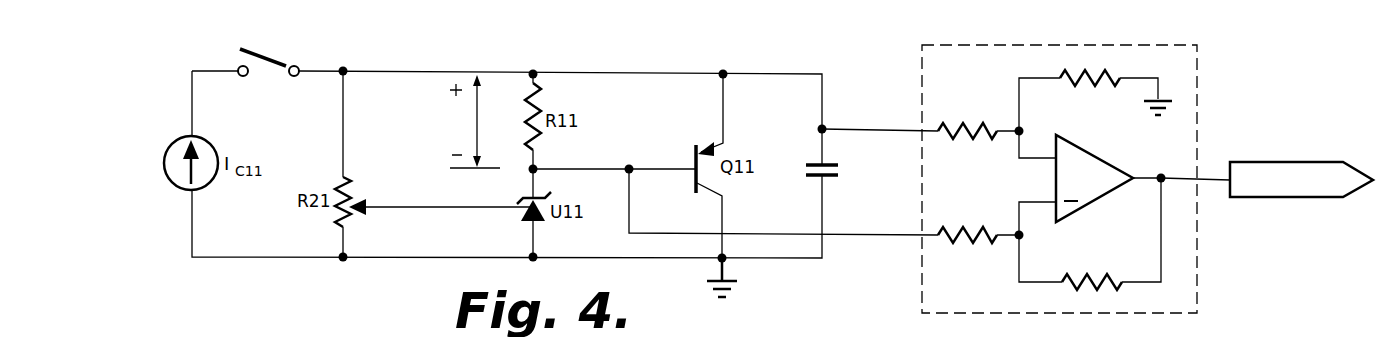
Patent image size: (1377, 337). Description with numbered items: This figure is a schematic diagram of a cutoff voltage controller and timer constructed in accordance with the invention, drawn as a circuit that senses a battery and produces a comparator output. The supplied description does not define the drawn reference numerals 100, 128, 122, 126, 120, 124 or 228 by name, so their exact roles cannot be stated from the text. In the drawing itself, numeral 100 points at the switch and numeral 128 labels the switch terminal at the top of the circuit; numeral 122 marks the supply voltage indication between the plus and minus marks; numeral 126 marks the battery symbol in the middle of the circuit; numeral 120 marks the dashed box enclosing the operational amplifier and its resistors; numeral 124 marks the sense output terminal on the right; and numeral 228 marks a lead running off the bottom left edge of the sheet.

The sensing circuit 100 is at (216, 44).
The switch S11 128 is at (292, 54).
The supply voltage Vcc 122 is at (464, 123).
The battery B11 126 is at (812, 177).
The comparator circuit 120 is at (1198, 222).
The sense output terminal 124 is at (1300, 162).
The reference numeral 228 is at (224, 333).